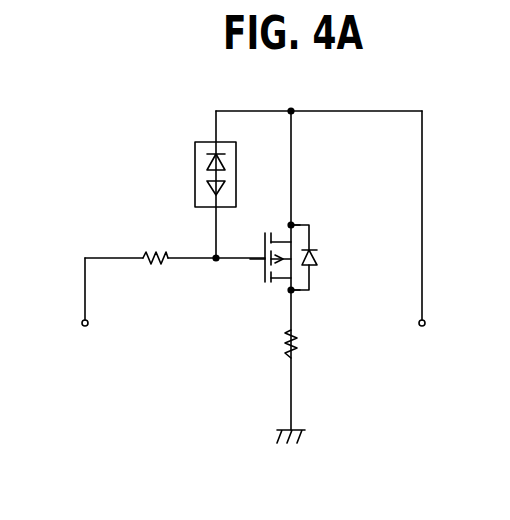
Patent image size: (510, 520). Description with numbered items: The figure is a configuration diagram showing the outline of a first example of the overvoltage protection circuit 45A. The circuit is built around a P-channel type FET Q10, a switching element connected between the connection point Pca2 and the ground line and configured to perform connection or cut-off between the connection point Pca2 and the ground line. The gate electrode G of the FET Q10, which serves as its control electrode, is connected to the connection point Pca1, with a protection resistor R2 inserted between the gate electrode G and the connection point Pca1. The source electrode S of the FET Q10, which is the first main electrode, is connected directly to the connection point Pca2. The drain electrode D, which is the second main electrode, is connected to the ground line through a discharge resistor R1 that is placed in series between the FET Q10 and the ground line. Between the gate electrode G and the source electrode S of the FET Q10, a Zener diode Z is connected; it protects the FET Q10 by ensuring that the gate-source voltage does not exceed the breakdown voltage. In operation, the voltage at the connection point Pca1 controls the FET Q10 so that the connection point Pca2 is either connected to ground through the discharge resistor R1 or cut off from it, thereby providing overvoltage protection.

The overvoltage protection circuit 45A is at (120, 115).
The Zener diode Z is at (191, 158).
The protection resistor R2 is at (155, 247).
The discharge resistor R1 is at (285, 340).
The P-channel type FET Q10 is at (325, 190).
The source electrode S is at (301, 214).
The gate electrode G is at (255, 276).
The drain electrode D is at (304, 306).
The connection point Pca1 is at (82, 341).
The connection point Pca2 is at (421, 341).